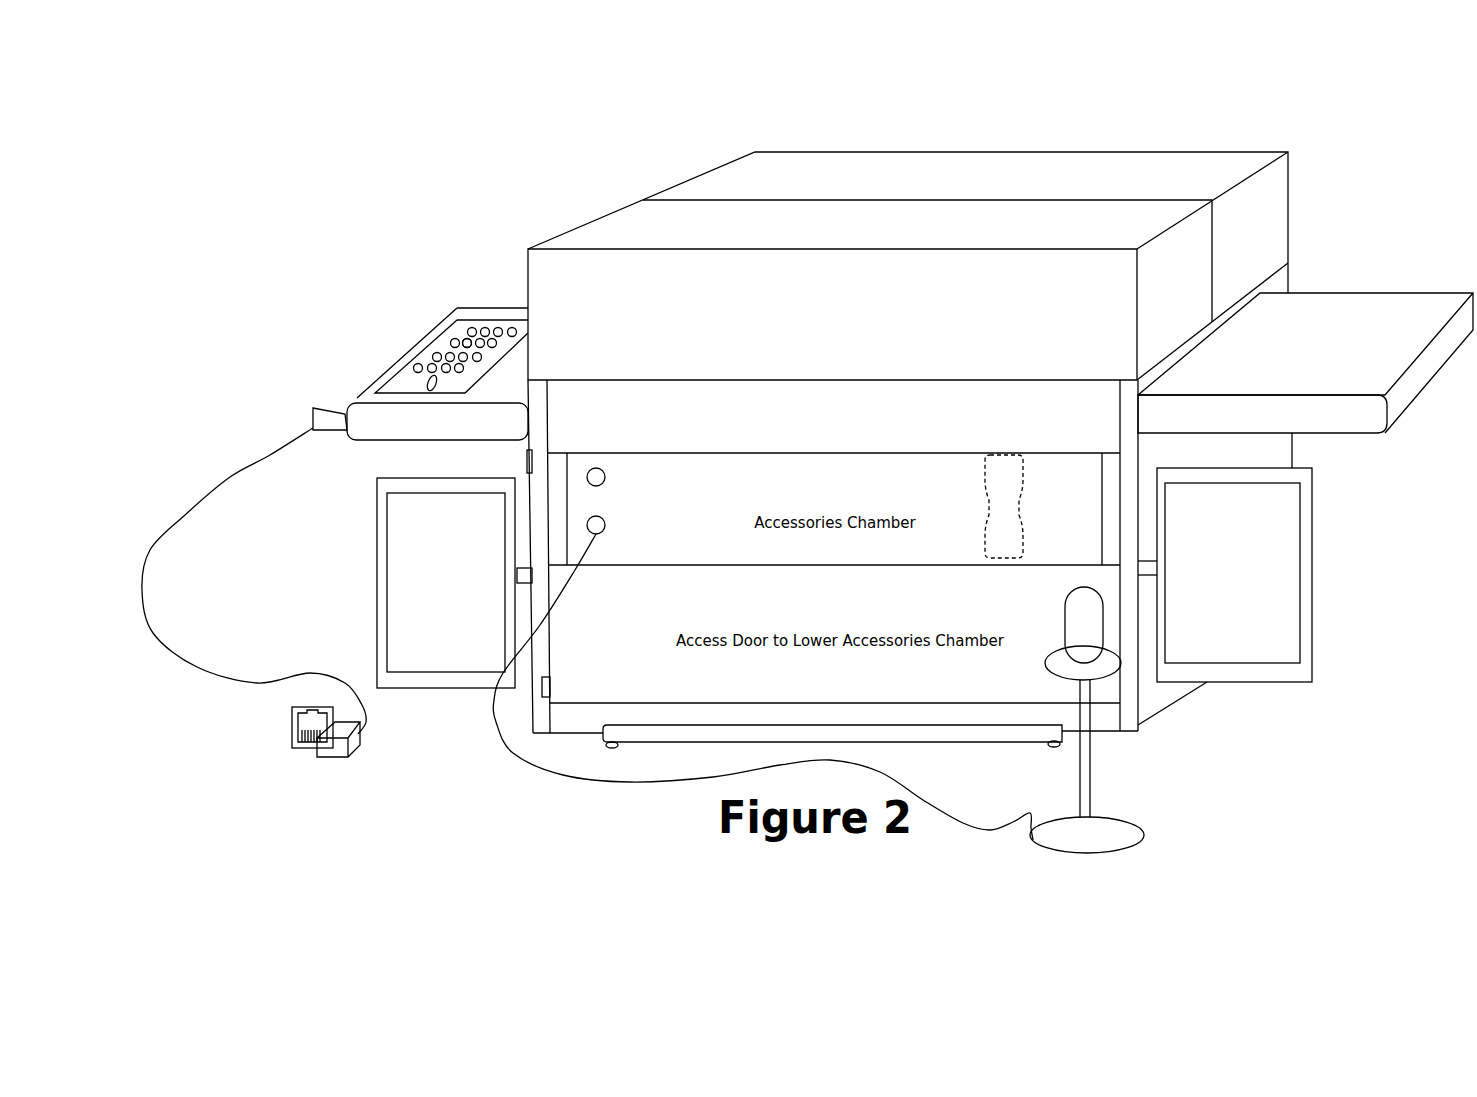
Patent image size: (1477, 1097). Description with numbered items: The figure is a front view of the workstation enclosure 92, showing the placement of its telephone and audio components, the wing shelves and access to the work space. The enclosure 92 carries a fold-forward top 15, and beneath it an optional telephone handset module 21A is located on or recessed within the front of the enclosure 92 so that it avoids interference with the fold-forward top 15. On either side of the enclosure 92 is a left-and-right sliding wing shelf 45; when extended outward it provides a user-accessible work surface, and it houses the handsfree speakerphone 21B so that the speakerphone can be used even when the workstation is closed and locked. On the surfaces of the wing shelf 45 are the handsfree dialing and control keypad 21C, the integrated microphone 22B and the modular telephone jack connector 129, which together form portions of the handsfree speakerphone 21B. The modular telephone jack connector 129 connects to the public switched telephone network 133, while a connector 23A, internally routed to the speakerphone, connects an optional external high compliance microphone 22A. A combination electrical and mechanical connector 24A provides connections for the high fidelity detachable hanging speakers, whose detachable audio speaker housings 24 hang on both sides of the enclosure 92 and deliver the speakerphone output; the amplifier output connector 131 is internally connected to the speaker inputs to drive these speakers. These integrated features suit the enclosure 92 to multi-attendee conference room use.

The fold-forward top 15 is at (908, 266).
The telephone handset module 21A is at (1008, 448).
The handsfree speakerphone 21B is at (450, 323).
The handsfree dialing and control keypad 21C is at (467, 347).
The external high compliance microphone 22A is at (1087, 648).
The integrated microphone 22B is at (420, 382).
The connector for external microphone 23A is at (583, 512).
The detachable audio speaker housings 24 is at (395, 592).
The combination electrical and mechanical connector 24A is at (517, 592).
The sliding wing shelf 45 is at (507, 307).
The enclosure 92 is at (1250, 453).
The modular telephone jack connector 129 is at (347, 403).
The amplifier output connector 131 is at (152, 592).
The public switched telephone network 133 is at (283, 733).